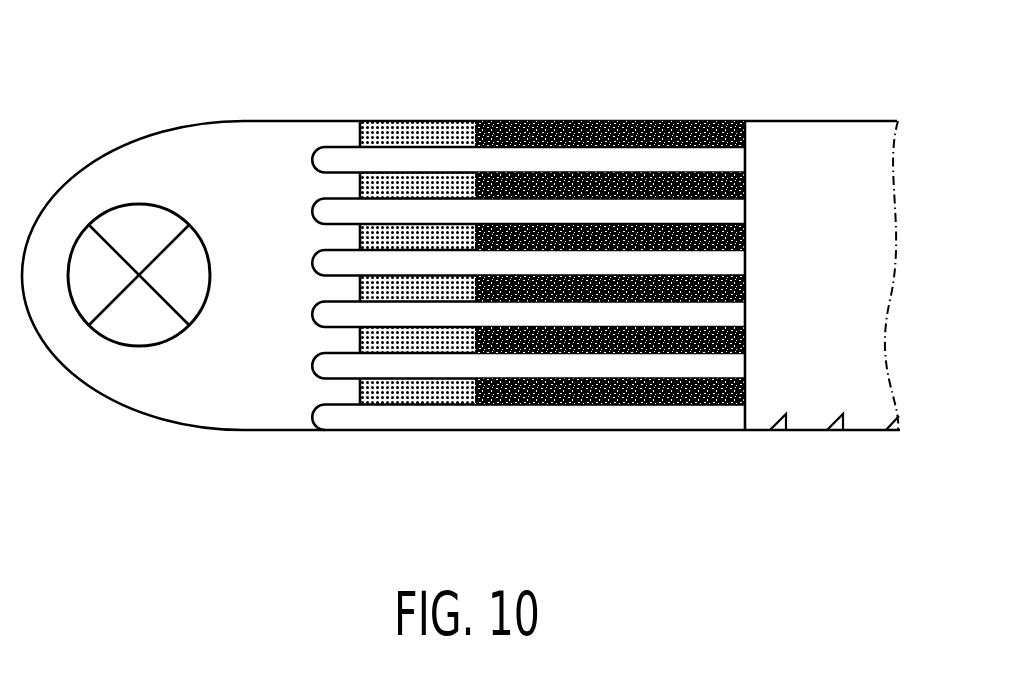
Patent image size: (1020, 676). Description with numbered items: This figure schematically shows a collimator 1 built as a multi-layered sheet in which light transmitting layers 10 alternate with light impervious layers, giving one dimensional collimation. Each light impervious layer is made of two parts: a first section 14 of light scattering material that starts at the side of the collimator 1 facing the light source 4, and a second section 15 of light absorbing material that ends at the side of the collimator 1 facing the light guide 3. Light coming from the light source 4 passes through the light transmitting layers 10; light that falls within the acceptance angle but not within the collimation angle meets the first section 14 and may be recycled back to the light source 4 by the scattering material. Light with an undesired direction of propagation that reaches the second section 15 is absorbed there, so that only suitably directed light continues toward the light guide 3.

The collimator 1 is at (528, 437).
The light guide 3 is at (840, 150).
The light source 4 is at (156, 181).
The light transmitting layers 10 is at (455, 370).
The first section 14 is at (402, 398).
The second section 15 is at (600, 407).